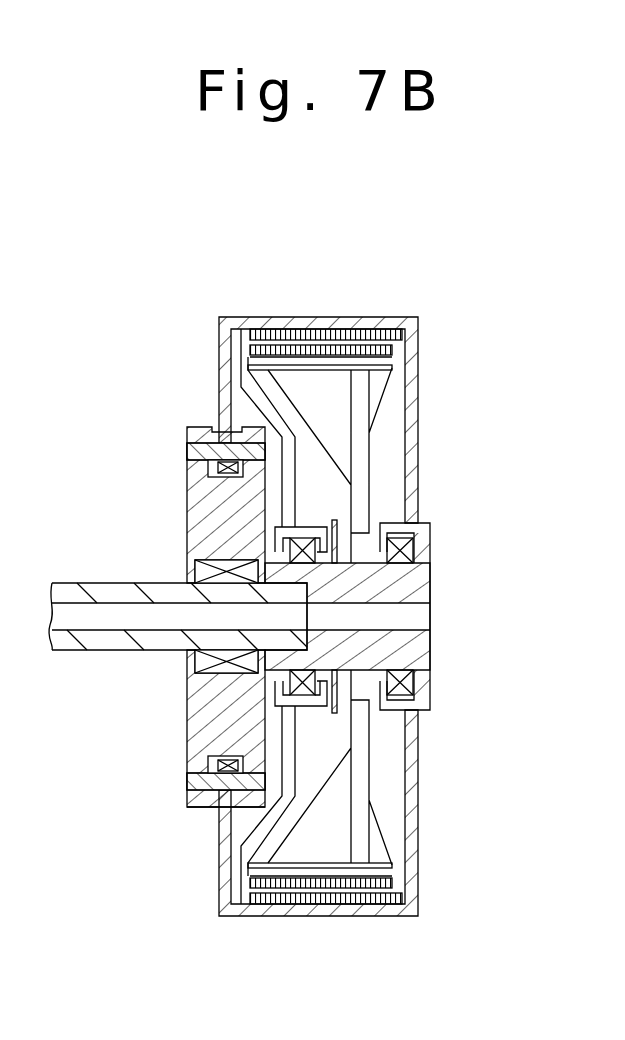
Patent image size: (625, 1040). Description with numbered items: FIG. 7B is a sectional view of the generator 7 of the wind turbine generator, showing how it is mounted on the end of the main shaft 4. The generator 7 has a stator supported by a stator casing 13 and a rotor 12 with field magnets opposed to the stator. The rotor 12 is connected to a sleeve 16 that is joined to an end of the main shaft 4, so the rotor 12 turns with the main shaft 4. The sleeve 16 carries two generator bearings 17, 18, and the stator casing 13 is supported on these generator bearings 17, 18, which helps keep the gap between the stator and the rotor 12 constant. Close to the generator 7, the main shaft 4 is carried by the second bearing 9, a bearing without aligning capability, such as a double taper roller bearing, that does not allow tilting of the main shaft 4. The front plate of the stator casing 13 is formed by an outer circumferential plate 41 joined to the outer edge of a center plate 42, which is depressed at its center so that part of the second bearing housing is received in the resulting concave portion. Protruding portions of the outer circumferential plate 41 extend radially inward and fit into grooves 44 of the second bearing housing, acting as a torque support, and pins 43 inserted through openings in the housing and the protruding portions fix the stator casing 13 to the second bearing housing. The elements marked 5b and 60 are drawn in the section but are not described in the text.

The generator 7 is at (468, 288).
The stator casing 13 is at (373, 317).
The outer circumferential plate 41 is at (218, 360).
The center plate 42 is at (218, 412).
The pins 43 is at (184, 452).
The rotor 12 is at (358, 463).
The main shaft 4 is at (100, 592).
The generator bearing 18 is at (430, 555).
The generator bearing 17 is at (303, 562).
The sleeve 16 is at (417, 643).
The hub end portion 5b is at (430, 657).
The second bearing 9 is at (185, 667).
The bracket 60 is at (197, 750).
The grooves 44 is at (217, 807).